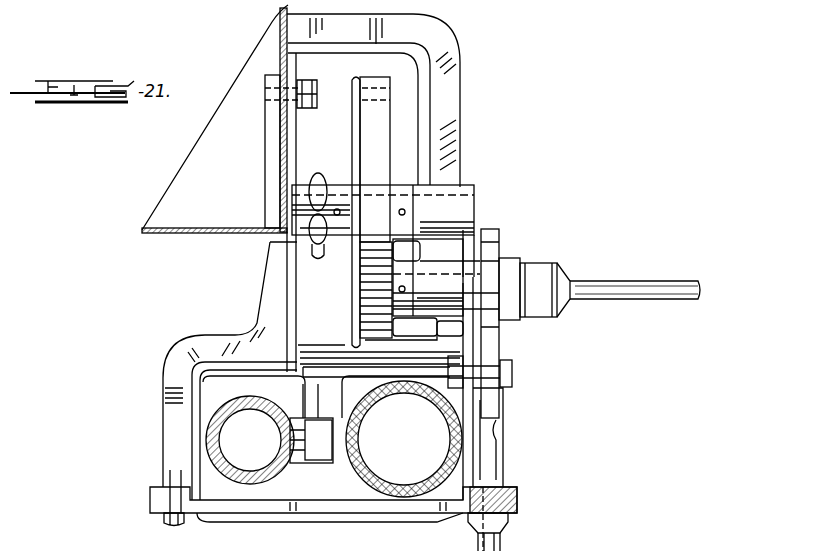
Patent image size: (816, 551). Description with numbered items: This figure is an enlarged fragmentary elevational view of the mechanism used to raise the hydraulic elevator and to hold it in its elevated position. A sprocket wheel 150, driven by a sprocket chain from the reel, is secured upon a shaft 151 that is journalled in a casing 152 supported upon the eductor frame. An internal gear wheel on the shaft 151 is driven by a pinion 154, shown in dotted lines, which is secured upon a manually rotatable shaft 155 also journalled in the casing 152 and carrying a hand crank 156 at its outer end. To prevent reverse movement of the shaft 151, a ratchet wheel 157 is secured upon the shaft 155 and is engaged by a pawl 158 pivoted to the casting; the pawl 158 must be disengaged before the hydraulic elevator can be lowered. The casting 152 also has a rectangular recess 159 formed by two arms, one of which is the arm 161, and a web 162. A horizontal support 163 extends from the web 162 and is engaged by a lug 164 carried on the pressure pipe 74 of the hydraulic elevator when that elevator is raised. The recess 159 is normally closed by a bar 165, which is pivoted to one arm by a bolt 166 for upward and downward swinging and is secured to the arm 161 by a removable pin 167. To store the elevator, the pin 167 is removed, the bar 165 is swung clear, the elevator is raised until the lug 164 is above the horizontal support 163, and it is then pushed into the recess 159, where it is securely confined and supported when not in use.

The pressure pipe 74 is at (212, 420).
The sprocket wheel 150 is at (316, 260).
The shaft 151 is at (347, 203).
The casing 152 is at (447, 60).
The pinion 154 is at (357, 320).
The manually rotatable shaft 155 is at (502, 238).
The hand crank 156 is at (664, 266).
The ratchet wheel 157 is at (490, 283).
The pawl 158 is at (490, 391).
The rectangular recess 159 is at (257, 487).
The arm 161 is at (470, 492).
The web 162 is at (297, 372).
The horizontal support 163 is at (373, 90).
The lug 164 is at (308, 445).
The bar 165 is at (412, 517).
The bolt 166 is at (163, 519).
The removable pin 167 is at (503, 549).